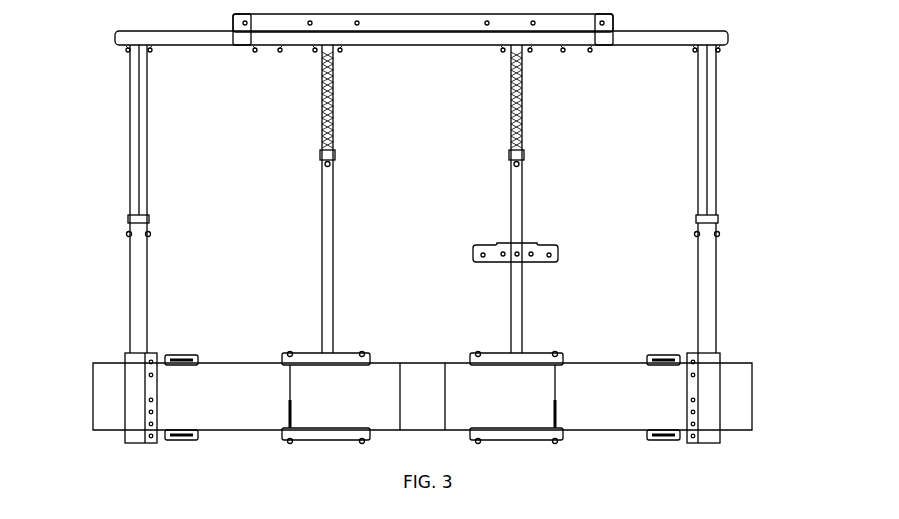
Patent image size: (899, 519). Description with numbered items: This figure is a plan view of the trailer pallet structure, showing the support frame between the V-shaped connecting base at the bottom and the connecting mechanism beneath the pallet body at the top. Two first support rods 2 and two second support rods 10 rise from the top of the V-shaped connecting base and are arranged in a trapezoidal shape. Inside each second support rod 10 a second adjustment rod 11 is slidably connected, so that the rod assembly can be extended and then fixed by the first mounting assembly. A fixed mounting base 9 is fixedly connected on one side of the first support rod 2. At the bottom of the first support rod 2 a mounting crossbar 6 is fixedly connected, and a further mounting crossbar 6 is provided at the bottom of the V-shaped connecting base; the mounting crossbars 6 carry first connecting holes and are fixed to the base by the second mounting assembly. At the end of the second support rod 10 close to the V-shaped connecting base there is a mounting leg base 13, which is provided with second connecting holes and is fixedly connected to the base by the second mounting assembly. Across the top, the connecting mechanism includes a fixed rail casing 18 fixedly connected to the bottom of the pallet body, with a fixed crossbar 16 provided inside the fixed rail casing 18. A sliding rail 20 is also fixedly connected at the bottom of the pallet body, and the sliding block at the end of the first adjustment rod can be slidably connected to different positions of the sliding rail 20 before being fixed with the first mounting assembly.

The first support rod 2 is at (322, 234).
The mounting crossbar 6 is at (283, 357).
The fixed mounting base 9 is at (558, 250).
The second support rod 10 is at (700, 333).
The second adjustment rod 11 is at (710, 183).
The mounting leg base 13 is at (130, 383).
The fixed crossbar 16 is at (700, 41).
The fixed rail casing 18 is at (235, 42).
The sliding rail 20 is at (577, 40).